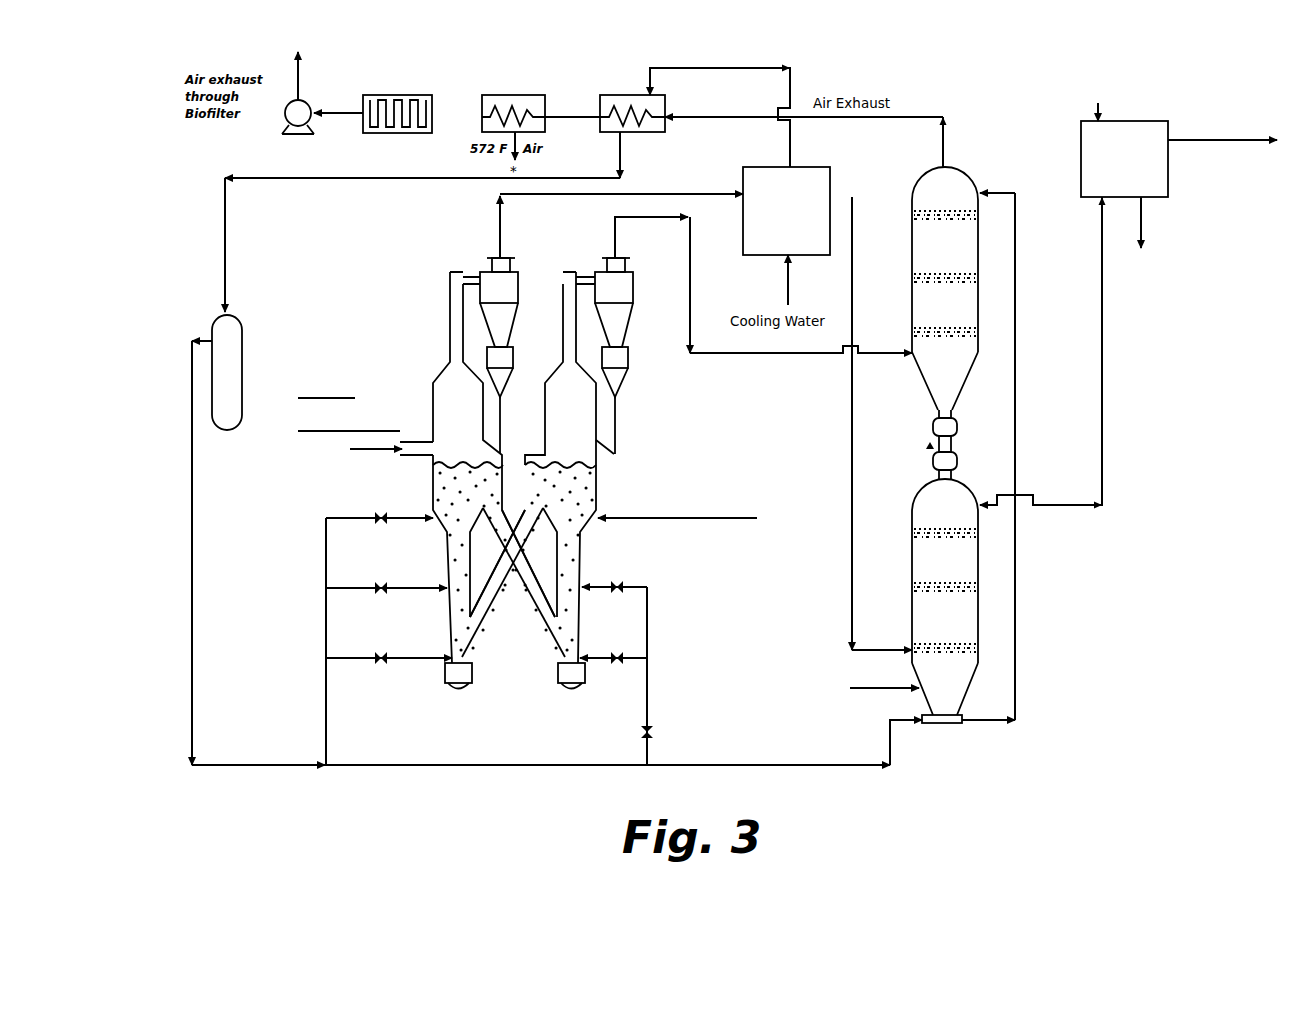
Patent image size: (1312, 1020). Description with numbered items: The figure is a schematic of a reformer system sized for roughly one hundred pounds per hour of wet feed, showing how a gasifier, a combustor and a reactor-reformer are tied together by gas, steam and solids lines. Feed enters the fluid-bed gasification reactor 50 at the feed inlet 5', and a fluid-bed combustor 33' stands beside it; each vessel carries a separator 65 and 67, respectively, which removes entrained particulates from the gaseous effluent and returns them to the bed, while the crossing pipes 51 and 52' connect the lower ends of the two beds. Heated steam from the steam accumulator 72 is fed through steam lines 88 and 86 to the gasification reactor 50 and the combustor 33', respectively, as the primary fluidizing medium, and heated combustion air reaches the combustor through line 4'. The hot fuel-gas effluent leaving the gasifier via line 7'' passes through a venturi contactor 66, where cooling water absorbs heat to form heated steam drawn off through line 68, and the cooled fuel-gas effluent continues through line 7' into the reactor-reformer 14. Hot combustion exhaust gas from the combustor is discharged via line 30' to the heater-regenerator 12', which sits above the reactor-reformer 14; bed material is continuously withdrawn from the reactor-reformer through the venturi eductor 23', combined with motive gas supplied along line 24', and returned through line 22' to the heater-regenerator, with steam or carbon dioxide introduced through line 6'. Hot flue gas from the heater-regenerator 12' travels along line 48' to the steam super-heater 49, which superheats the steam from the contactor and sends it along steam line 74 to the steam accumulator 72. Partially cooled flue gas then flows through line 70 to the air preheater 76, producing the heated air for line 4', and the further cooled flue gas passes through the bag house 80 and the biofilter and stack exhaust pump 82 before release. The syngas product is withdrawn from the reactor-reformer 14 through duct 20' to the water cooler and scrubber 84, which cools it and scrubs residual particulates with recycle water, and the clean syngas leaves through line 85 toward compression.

The stack exhaust pump 82 is at (300, 84).
The bag house 80 is at (391, 134).
The air preheater 76 is at (482, 101).
The line 70 is at (580, 116).
The steam super-heater 49 is at (631, 95).
The line 68 is at (752, 68).
The venturi contactor 66 is at (763, 167).
The line 48' is at (937, 122).
The heater-regenerator 12' is at (933, 310).
The water cooler and scrubber 84 is at (1081, 160).
The line 85 is at (1212, 148).
The steam line 74 is at (405, 182).
The steam accumulator 72 is at (216, 320).
The gas line to venturi 7'' is at (621, 209).
The separator 65 is at (514, 273).
The separator 67 is at (629, 273).
The fluid-bed gasification reactor 50 is at (450, 370).
The fluid-bed combustor 33' is at (538, 480).
The feedstock inlet 5' is at (338, 428).
The line 30' is at (763, 307).
The line 7' is at (844, 423).
The line 22' is at (1046, 456).
The reactor-reformer 14 is at (913, 497).
The duct 20' is at (1074, 378).
The line 4' is at (684, 517).
The solids transfer pipe 51 is at (487, 607).
The solids transfer pipe 52' is at (511, 591).
The steam line 88 is at (326, 718).
The steam line 86 is at (648, 700).
The line 6' is at (859, 720).
The venturi eductor 23' is at (968, 766).
The line 24' is at (541, 781).